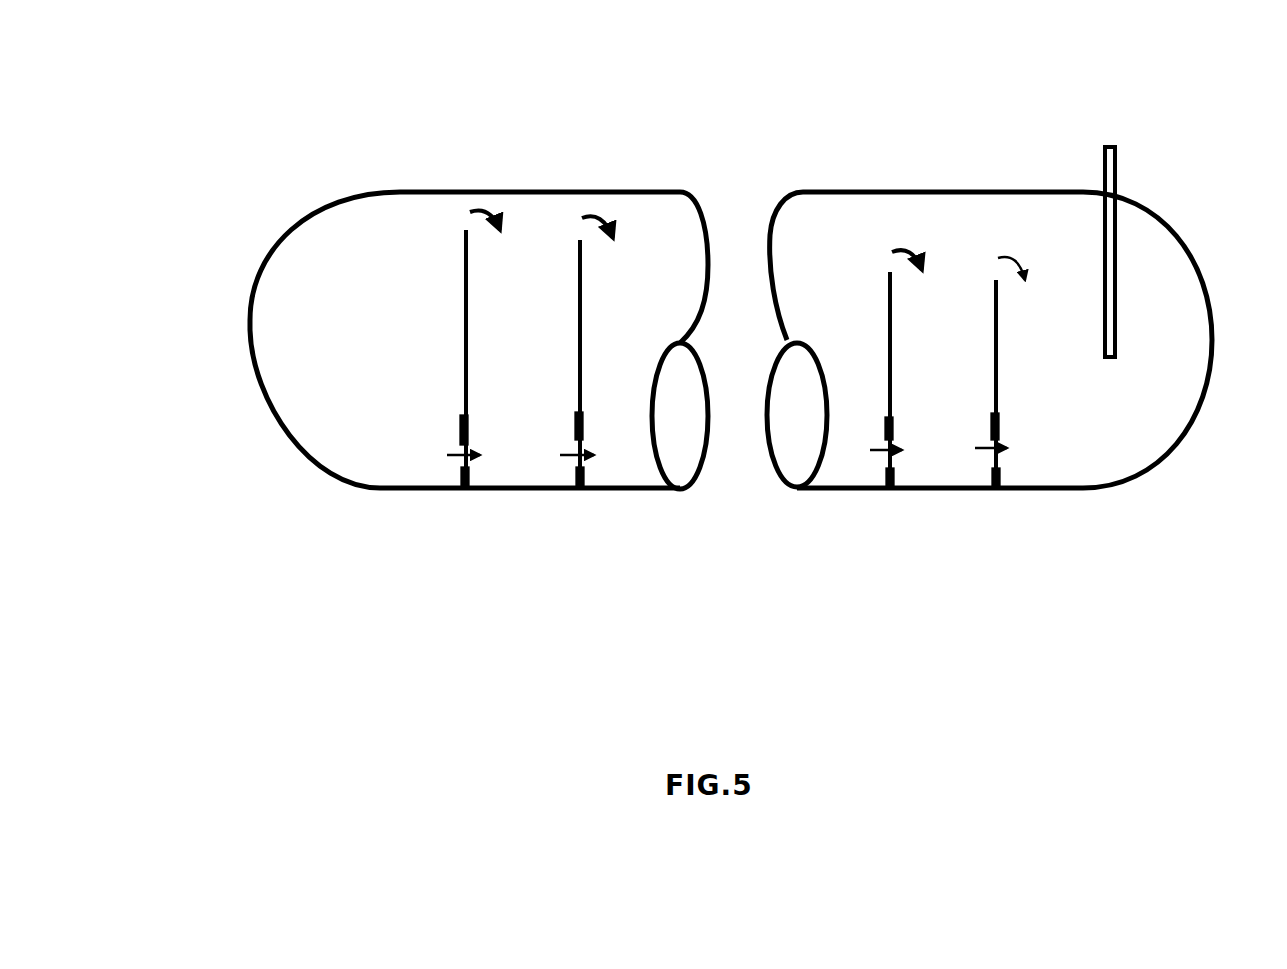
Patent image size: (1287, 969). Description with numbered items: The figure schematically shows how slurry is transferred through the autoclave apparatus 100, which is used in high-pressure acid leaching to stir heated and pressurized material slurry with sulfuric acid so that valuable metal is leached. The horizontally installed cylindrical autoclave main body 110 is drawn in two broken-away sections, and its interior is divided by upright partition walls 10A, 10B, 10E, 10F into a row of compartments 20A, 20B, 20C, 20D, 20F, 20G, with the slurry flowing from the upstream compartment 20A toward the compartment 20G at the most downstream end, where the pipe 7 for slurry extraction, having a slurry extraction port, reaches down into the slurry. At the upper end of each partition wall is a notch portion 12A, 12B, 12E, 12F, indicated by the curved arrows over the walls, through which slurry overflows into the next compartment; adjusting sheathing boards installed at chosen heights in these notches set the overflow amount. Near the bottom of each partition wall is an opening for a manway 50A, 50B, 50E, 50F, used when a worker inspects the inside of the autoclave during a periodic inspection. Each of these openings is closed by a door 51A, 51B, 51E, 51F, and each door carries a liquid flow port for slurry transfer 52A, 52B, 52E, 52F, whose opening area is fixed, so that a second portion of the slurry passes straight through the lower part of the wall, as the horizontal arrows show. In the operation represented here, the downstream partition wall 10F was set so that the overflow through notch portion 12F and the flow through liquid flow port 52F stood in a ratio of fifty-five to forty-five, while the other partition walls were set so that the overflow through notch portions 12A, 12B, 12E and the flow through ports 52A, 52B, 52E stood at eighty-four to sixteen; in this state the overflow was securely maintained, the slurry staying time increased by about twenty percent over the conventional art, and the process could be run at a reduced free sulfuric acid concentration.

The autoclave apparatus 100 is at (350, 671).
The autoclave main body 110 is at (262, 405).
The pipe for slurry extraction 7 is at (1118, 165).
The partition wall 10A is at (463, 228).
The partition wall 10B is at (580, 238).
The partition wall 10E is at (890, 258).
The partition wall 10F is at (995, 270).
The notch portion 12A is at (460, 290).
The notch portion 12B is at (592, 265).
The notch portion 12E is at (883, 250).
The notch portion 12F is at (1000, 245).
The compartment 20A is at (330, 290).
The compartment 20B is at (515, 287).
The compartment 20C is at (617, 280).
The compartment 20D is at (830, 285).
The compartment 20F is at (955, 300).
The compartment 20G is at (1130, 440).
The opening for a manway 50A is at (480, 468).
The opening for a manway 50B is at (597, 468).
The opening for a manway 50E is at (905, 465).
The opening for a manway 50F is at (1005, 465).
The door 51A is at (448, 488).
The door 51B is at (570, 488).
The door 51E is at (872, 488).
The door 51F is at (985, 488).
The liquid flow port for slurry transfer 52A is at (455, 462).
The liquid flow port for slurry transfer 52B is at (572, 462).
The liquid flow port for slurry transfer 52E is at (880, 465).
The liquid flow port for slurry transfer 52F is at (980, 465).